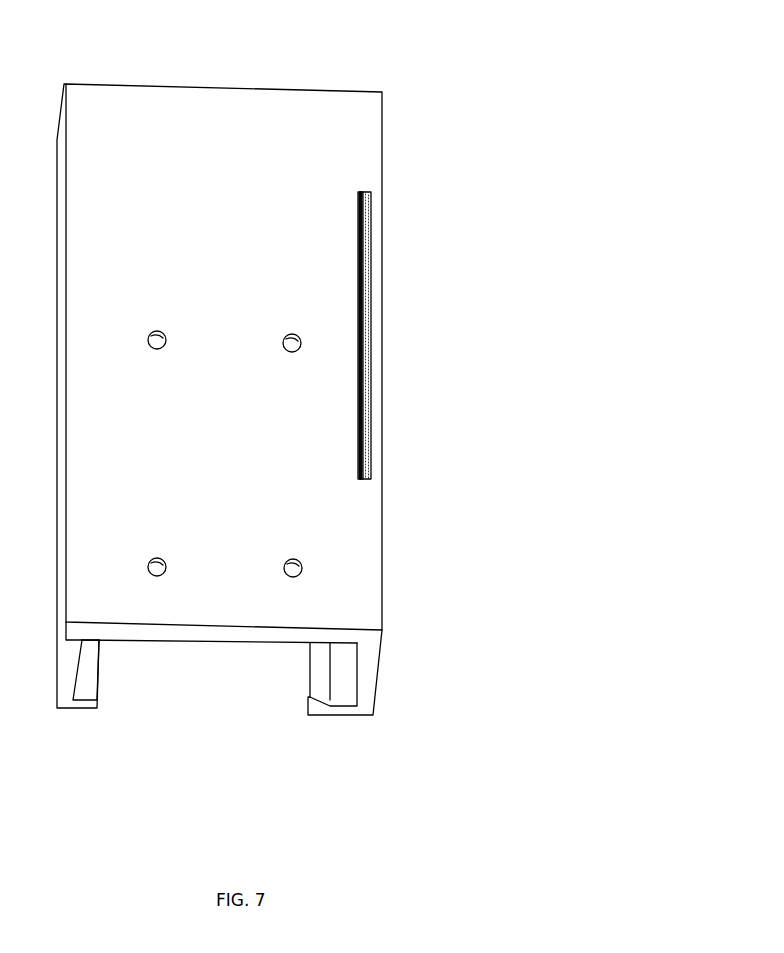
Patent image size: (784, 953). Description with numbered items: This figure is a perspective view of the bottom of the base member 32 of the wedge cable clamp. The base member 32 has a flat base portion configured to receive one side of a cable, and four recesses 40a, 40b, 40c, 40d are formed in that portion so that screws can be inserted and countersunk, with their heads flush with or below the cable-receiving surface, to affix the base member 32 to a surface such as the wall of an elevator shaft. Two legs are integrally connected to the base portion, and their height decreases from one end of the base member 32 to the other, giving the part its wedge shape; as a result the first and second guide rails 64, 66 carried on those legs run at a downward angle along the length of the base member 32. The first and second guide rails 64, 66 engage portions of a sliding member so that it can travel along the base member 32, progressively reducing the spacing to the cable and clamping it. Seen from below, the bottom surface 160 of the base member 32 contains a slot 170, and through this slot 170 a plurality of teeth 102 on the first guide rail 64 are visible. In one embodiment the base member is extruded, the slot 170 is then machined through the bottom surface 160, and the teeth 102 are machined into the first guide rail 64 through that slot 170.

The base member 32 is at (345, 128).
The bottom surface 160 is at (220, 127).
The teeth 102 is at (365, 226).
The slot 170 is at (367, 438).
The recess 40a is at (154, 332).
The recess 40b is at (290, 335).
The recess 40c is at (154, 559).
The recess 40d is at (291, 560).
The first guide rail 64 is at (343, 694).
The second guide rail 66 is at (85, 686).